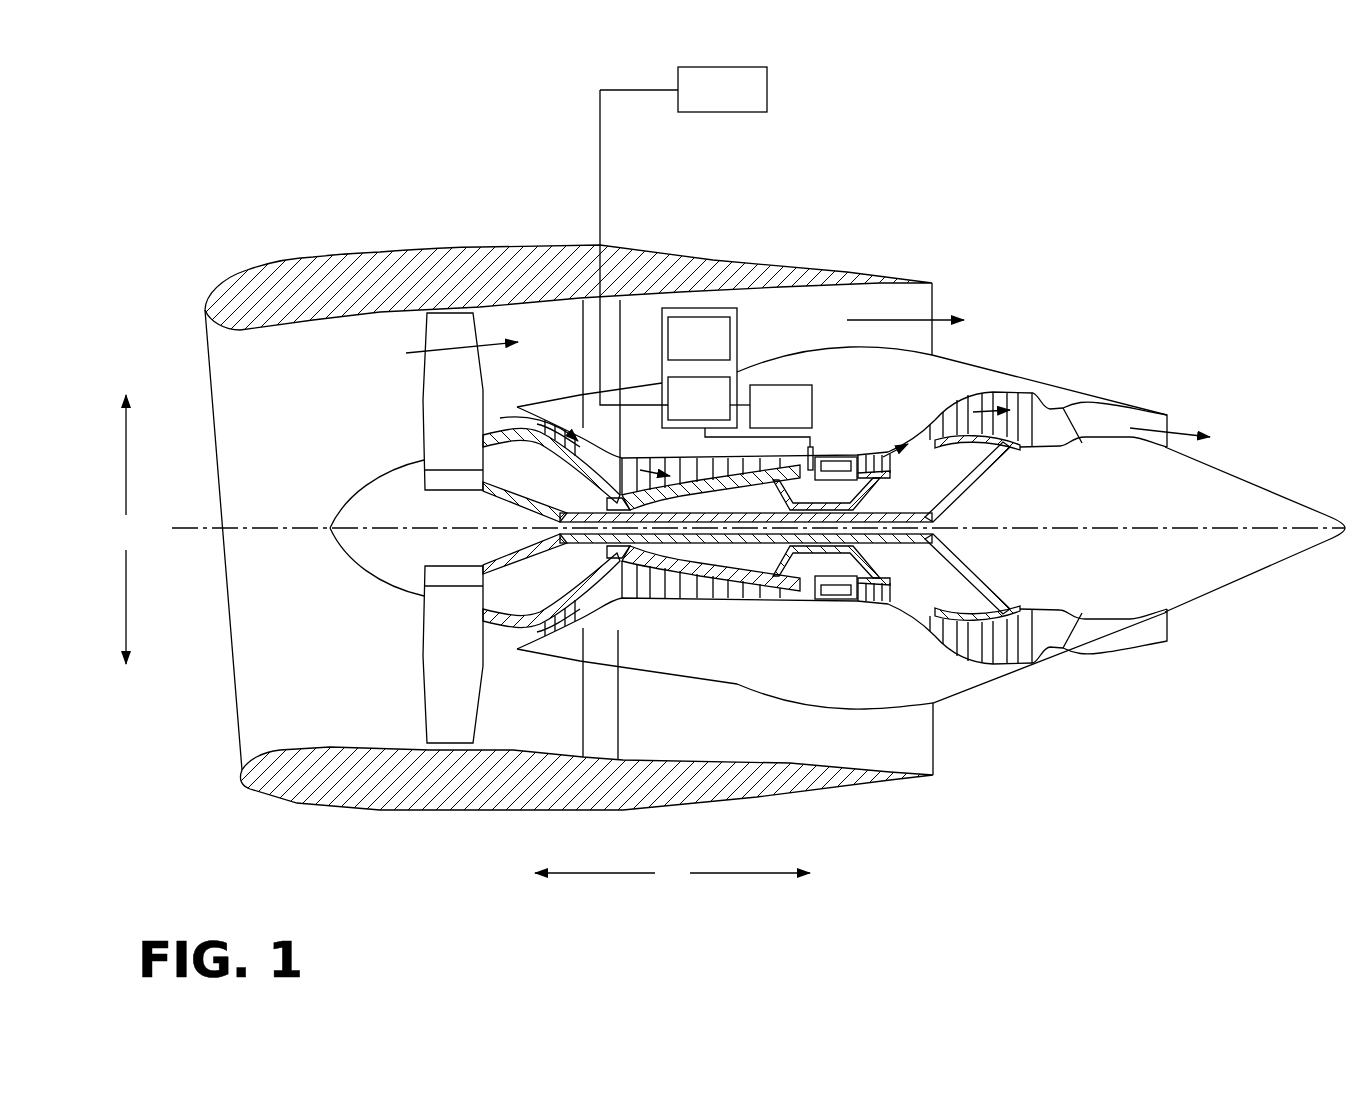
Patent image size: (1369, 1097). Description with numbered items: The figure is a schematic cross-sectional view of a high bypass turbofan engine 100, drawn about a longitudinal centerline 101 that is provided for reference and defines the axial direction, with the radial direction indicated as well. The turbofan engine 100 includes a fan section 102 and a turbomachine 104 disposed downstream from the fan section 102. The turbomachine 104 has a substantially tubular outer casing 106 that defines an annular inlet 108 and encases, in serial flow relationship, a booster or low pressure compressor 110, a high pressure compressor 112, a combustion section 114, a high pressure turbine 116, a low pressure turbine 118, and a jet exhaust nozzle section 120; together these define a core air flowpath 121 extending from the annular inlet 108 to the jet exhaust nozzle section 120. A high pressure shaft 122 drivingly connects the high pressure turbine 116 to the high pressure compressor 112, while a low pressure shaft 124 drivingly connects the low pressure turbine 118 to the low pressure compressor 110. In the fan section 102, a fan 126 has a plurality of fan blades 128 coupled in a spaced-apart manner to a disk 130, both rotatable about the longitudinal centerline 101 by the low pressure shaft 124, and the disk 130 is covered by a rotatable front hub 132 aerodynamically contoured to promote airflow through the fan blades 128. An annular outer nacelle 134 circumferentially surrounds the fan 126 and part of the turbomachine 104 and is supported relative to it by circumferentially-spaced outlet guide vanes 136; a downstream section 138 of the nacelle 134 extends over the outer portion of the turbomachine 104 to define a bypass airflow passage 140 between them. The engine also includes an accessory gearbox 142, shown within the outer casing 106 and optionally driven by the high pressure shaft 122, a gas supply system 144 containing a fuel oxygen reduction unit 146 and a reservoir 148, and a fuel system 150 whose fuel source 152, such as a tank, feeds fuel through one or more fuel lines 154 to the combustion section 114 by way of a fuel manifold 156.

The turbofan engine 100 is at (1082, 253).
The longitudinal centerline 101 is at (1137, 527).
The fan section 102 is at (381, 330).
The turbomachine 104 is at (768, 312).
The outer casing 106 is at (790, 701).
The annular inlet 108 is at (531, 639).
The low pressure compressor 110 is at (563, 657).
The high pressure compressor 112 is at (656, 596).
The combustion section 114 is at (827, 601).
The high pressure turbine 116 is at (906, 603).
The low pressure turbine 118 is at (1017, 669).
The jet exhaust nozzle section 120 is at (1083, 640).
The core air flowpath 121 is at (605, 611).
The high pressure shaft 122 is at (831, 500).
The low pressure shaft 124 is at (888, 511).
The fan 126 is at (368, 402).
The fan blades 128 is at (421, 683).
The disk 130 is at (440, 482).
The front hub 132 is at (350, 550).
The outer nacelle 134 is at (473, 810).
The outlet guide vanes 136 is at (620, 330).
The downstream section 138 is at (848, 264).
The bypass airflow passage 140 is at (794, 330).
The accessory gearbox 142 is at (765, 420).
The gas supply system 144 is at (725, 307).
The fuel oxygen reduction unit 146 is at (683, 412).
The reservoir 148 is at (683, 352).
The fuel system 150 is at (594, 176).
The fuel source 152 is at (707, 104).
The fuel lines 154 is at (602, 197).
The fuel manifold 156 is at (817, 444).